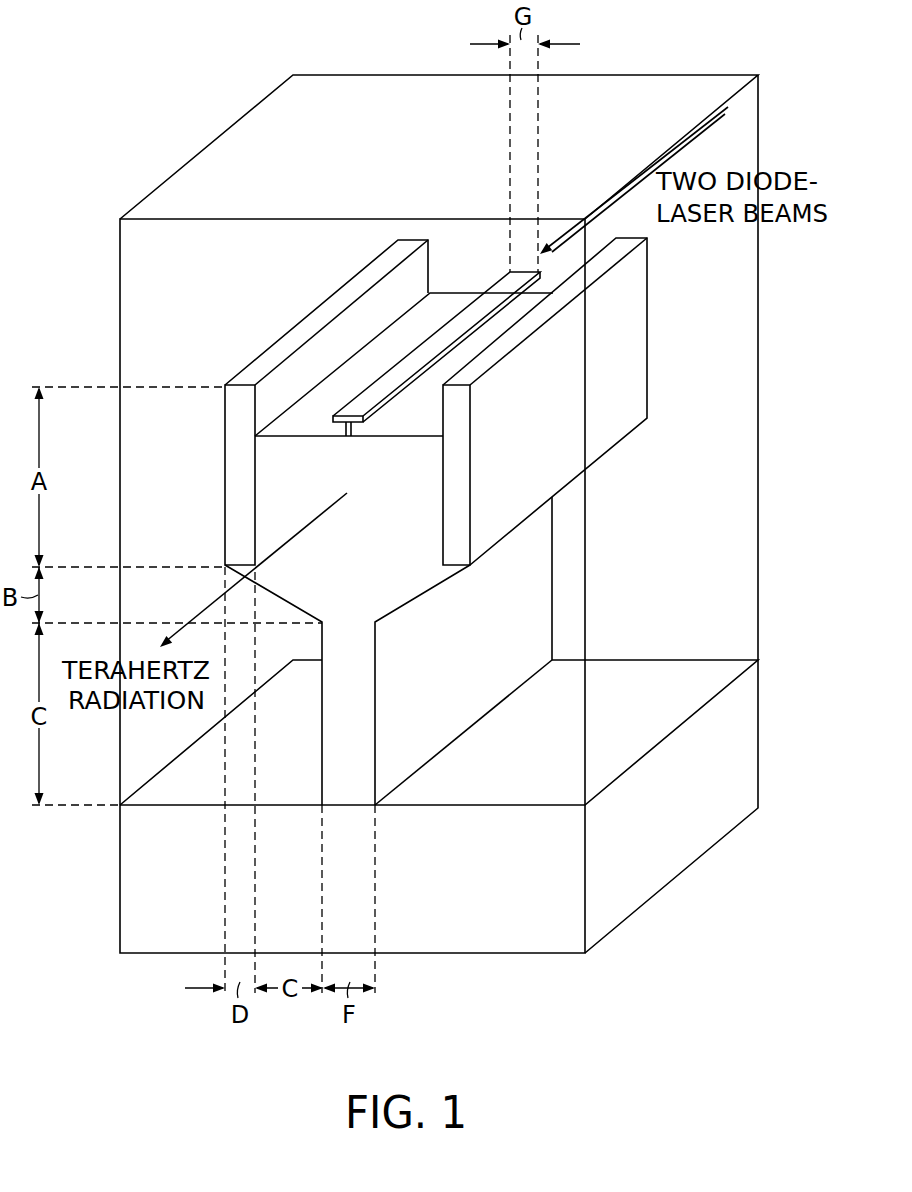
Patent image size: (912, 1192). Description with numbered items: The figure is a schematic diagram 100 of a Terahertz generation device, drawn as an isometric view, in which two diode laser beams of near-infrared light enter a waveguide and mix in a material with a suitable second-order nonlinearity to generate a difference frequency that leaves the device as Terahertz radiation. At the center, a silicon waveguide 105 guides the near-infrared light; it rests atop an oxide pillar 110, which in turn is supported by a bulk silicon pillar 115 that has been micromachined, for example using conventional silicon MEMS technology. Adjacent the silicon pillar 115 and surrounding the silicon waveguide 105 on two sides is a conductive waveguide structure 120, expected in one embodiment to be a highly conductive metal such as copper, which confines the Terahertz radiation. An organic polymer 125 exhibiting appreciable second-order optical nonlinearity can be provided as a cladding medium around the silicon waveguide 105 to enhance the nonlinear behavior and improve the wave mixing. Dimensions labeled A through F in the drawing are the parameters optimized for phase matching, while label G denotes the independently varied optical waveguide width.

The schematic diagram 100 is at (170, 122).
The silicon waveguide 105 is at (490, 288).
The oxide pillar 110 is at (348, 442).
The bulk silicon pillar 115 is at (318, 647).
The conductive waveguide structure 120 is at (280, 335).
The organic polymer 125 is at (408, 342).